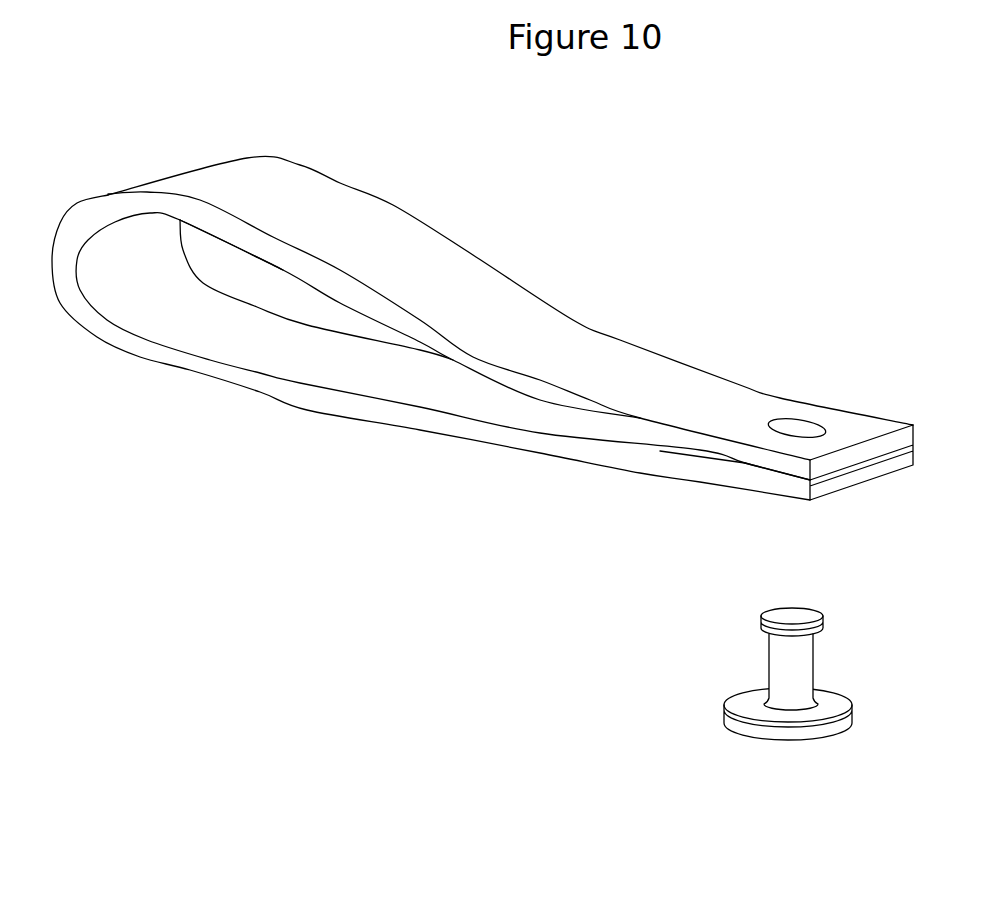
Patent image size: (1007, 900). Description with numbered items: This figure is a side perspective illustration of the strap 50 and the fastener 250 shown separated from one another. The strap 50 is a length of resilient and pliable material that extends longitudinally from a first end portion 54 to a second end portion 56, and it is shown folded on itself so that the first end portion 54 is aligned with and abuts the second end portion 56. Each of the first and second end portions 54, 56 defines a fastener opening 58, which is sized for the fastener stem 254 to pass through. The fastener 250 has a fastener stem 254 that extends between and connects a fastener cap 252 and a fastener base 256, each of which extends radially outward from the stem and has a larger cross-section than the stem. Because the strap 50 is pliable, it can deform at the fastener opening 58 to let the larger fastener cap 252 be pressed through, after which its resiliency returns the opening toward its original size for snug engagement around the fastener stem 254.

The strap 50 is at (492, 330).
The first end portion 54 is at (848, 422).
The second end portion 56 is at (758, 477).
The fastener opening 58 is at (790, 428).
The fastener 250 is at (706, 665).
The fastener cap 252 is at (772, 625).
The fastener stem 254 is at (775, 673).
The fastener base 256 is at (727, 713).